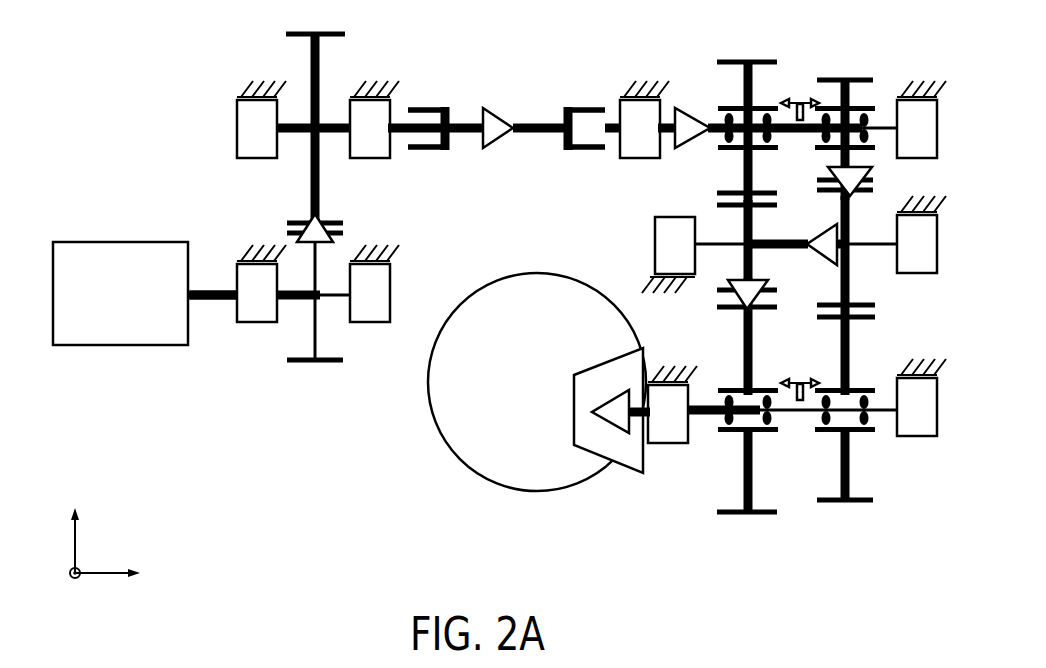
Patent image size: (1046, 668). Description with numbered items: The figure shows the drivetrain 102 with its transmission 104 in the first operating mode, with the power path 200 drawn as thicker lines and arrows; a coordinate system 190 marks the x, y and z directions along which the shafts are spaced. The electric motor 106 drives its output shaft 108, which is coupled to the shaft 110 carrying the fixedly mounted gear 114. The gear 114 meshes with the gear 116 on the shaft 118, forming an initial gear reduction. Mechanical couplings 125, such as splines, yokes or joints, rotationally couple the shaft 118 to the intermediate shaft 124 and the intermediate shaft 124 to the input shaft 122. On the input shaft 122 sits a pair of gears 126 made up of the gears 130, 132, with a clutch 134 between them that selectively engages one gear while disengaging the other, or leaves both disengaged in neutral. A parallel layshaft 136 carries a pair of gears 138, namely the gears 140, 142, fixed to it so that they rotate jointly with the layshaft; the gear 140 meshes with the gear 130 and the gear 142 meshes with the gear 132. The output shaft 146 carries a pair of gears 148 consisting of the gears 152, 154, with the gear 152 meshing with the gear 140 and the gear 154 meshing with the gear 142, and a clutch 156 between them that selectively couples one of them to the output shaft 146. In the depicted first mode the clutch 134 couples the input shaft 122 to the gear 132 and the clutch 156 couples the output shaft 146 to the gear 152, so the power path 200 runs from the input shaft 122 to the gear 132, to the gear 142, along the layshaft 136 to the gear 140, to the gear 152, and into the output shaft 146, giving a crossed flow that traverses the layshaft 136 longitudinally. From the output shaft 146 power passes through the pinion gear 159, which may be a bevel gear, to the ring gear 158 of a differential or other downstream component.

The drivetrain 102 is at (80, 46).
The transmission 104 is at (153, 83).
The electric motor 106 is at (60, 243).
The output shaft 108 is at (217, 326).
The shaft 110 is at (338, 298).
The gear 114 is at (334, 363).
The gear 116 is at (334, 33).
The shaft 118 is at (294, 133).
The input shaft 122 is at (789, 137).
The intermediate shaft 124 is at (535, 160).
The mechanical couplings 125 is at (415, 151).
The pair of gears 126 is at (684, 44).
The gear 130 is at (734, 45).
The gear 132 is at (824, 78).
The clutch 134 is at (798, 80).
The layshaft 136 is at (709, 242).
The pair of gears 138 is at (695, 302).
The gear 140 is at (751, 219).
The gear 142 is at (850, 288).
The output shaft 146 is at (812, 418).
The pair of gears 148 is at (682, 529).
The gear 152 is at (735, 515).
The gear 154 is at (870, 503).
The clutch 156 is at (797, 360).
The gear 158 is at (545, 492).
The gear 159 is at (630, 465).
The coordinate system 190 is at (107, 544).
The power path 200 is at (215, 288).